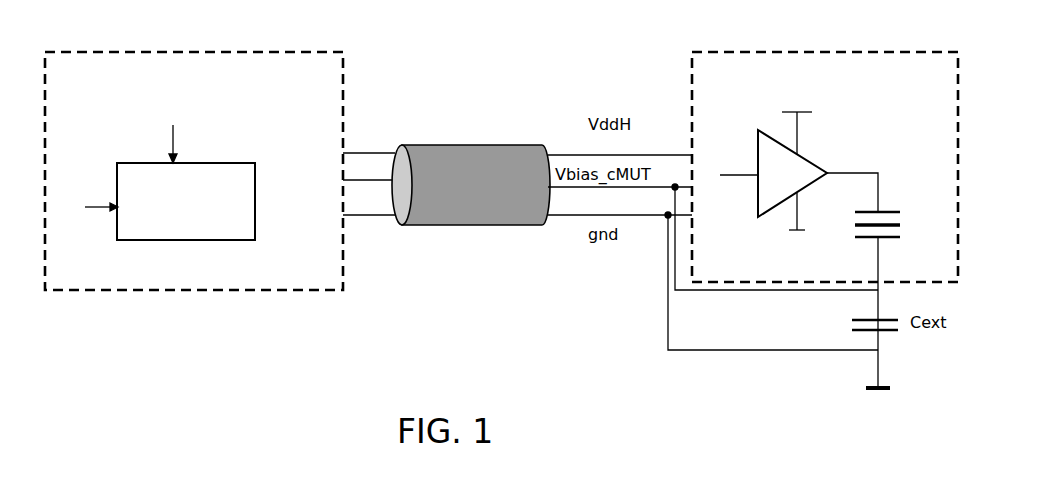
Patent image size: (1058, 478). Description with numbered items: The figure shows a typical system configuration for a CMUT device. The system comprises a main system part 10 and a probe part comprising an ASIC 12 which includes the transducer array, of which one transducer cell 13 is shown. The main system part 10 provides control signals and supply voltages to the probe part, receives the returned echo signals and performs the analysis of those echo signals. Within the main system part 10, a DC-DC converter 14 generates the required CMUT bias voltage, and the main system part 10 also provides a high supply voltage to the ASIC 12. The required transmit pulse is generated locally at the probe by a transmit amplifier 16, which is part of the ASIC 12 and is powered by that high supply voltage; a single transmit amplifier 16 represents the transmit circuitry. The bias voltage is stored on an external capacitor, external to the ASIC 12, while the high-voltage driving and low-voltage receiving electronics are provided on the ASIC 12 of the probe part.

The main system part 10 is at (343, 110).
The ASIC 12 is at (692, 95).
The transducer cell 13 is at (888, 212).
The DC-DC converter 14 is at (190, 240).
The transmit amplifier 16 is at (803, 150).